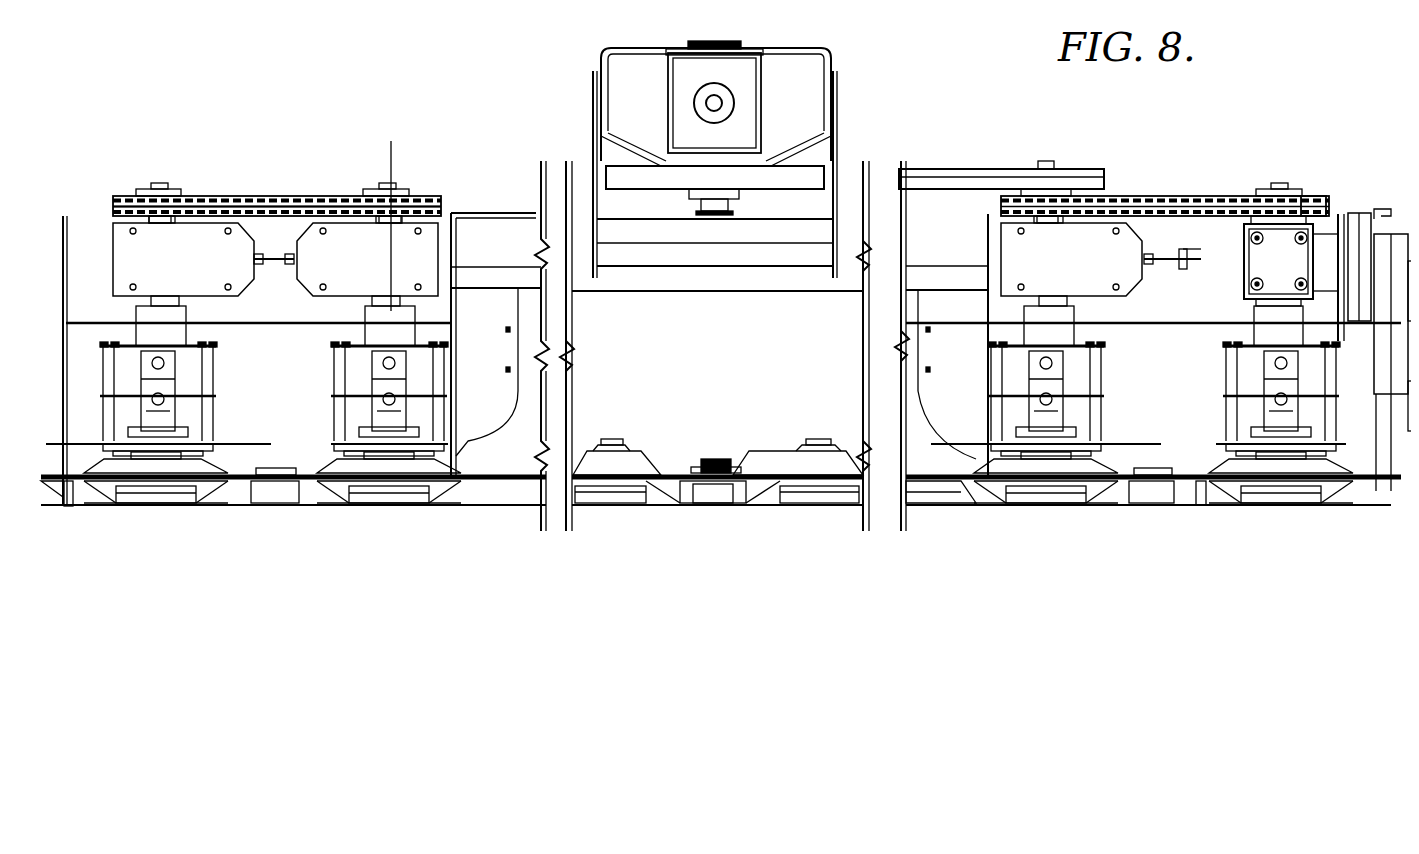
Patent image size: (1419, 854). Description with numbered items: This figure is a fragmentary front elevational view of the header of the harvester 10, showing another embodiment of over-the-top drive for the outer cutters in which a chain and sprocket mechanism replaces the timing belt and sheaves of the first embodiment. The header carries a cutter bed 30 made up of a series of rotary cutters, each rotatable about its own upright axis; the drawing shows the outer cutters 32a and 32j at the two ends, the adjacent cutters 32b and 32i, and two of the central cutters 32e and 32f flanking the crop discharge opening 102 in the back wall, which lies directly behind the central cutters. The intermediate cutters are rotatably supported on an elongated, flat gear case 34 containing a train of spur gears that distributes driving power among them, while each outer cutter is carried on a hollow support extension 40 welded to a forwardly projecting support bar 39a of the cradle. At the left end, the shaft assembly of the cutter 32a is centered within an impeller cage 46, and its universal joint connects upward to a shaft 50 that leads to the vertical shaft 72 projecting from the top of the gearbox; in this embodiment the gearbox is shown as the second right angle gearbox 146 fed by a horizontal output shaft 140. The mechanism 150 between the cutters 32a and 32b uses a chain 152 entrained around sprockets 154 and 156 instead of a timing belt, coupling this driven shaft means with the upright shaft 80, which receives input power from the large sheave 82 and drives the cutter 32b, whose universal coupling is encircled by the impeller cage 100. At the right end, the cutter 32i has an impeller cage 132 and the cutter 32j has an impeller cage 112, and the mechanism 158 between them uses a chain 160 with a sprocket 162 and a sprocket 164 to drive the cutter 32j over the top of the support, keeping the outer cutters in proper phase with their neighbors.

The harvester 10 is at (890, 92).
The cutter bed 30 is at (1328, 520).
The rotary cutter 32a is at (1213, 460).
The rotary cutter 32b is at (1005, 470).
The rotary cutter 32e is at (758, 460).
The rotary cutter 32f is at (650, 458).
The rotary cutter 32i is at (402, 462).
The rotary cutter 32j is at (210, 498).
The gear case 34 is at (936, 508).
The support bar 39a is at (290, 500).
The support extension 40 is at (68, 498).
The impeller cage 46 is at (1226, 408).
The shaft 50 is at (1252, 297).
The vertical shaft 72 is at (1274, 180).
The upright shaft 80 is at (1046, 158).
The large sheave 82 is at (1020, 168).
The impeller cage 100 is at (1103, 385).
The crop discharge opening 102 is at (717, 381).
The impeller cage 112 is at (228, 378).
The impeller cage 132 is at (336, 378).
The horizontal output shaft 140 is at (1104, 252).
The second right angle gearbox 146 is at (1270, 270).
The mechanism 150 is at (1218, 165).
The chain 152 is at (1145, 190).
The sprocket 154 is at (1000, 190).
The sprocket 156 is at (1317, 190).
The mechanism 158 is at (282, 165).
The chain 160 is at (297, 192).
The sprocket 162 is at (425, 190).
The sprocket 164 is at (118, 190).